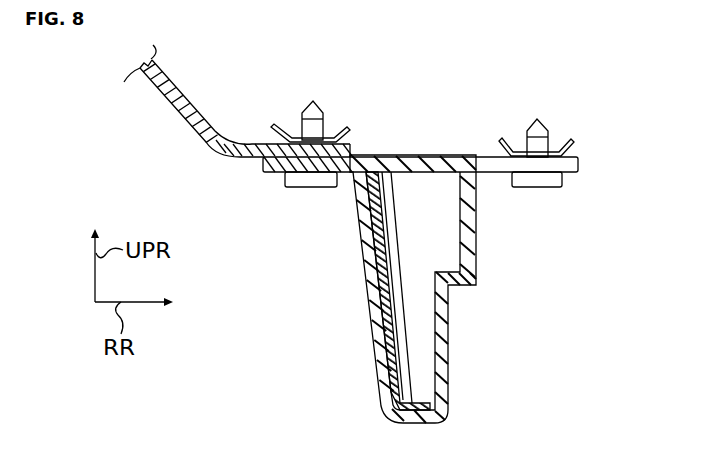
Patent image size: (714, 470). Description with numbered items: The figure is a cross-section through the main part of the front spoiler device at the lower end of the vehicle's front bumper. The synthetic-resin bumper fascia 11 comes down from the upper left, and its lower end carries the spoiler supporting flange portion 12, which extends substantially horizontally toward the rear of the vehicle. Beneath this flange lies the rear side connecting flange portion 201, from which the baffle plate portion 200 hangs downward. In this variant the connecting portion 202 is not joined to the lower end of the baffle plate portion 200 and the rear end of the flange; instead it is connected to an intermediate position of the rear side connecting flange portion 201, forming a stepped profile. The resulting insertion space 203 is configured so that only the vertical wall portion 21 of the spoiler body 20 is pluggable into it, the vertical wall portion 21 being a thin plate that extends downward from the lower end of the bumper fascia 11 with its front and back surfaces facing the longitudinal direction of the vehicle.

The bumper fascia 11 is at (151, 86).
The spoiler supporting flange portion 12 is at (261, 141).
The spoiler body 20 is at (375, 281).
The baffle plate portion 200 is at (354, 206).
The rear side connecting flange portion 201 is at (488, 156).
The connecting portion 202 is at (477, 280).
The insertion space 203 is at (433, 224).
The vertical wall portion 21 is at (378, 346).